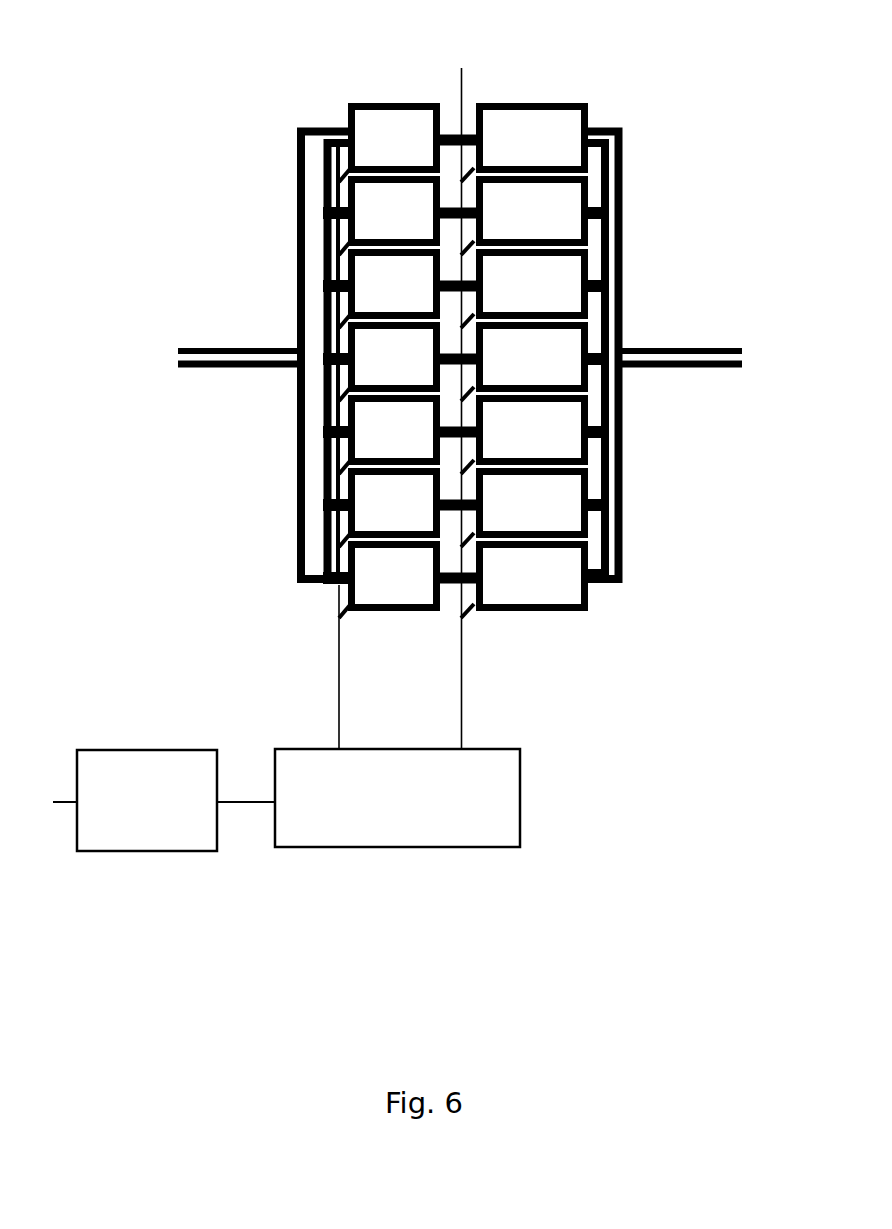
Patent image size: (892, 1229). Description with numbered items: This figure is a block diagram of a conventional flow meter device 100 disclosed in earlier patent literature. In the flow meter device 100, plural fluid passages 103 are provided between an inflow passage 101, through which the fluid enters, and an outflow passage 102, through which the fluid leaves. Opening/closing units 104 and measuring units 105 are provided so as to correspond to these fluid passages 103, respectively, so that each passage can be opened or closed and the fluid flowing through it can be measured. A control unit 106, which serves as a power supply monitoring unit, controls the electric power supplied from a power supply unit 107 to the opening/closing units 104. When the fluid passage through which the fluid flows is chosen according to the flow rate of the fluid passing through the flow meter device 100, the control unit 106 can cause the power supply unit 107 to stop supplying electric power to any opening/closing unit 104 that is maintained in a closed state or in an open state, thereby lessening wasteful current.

The flow meter device 100 is at (403, 483).
The inflow passage 101 is at (215, 337).
The outflow passage 102 is at (655, 338).
The fluid passages 103 is at (445, 378).
The opening/closing units 104 is at (377, 97).
The measuring units 105 is at (557, 95).
The control unit 106 is at (522, 722).
The power supply unit 107 is at (153, 740).